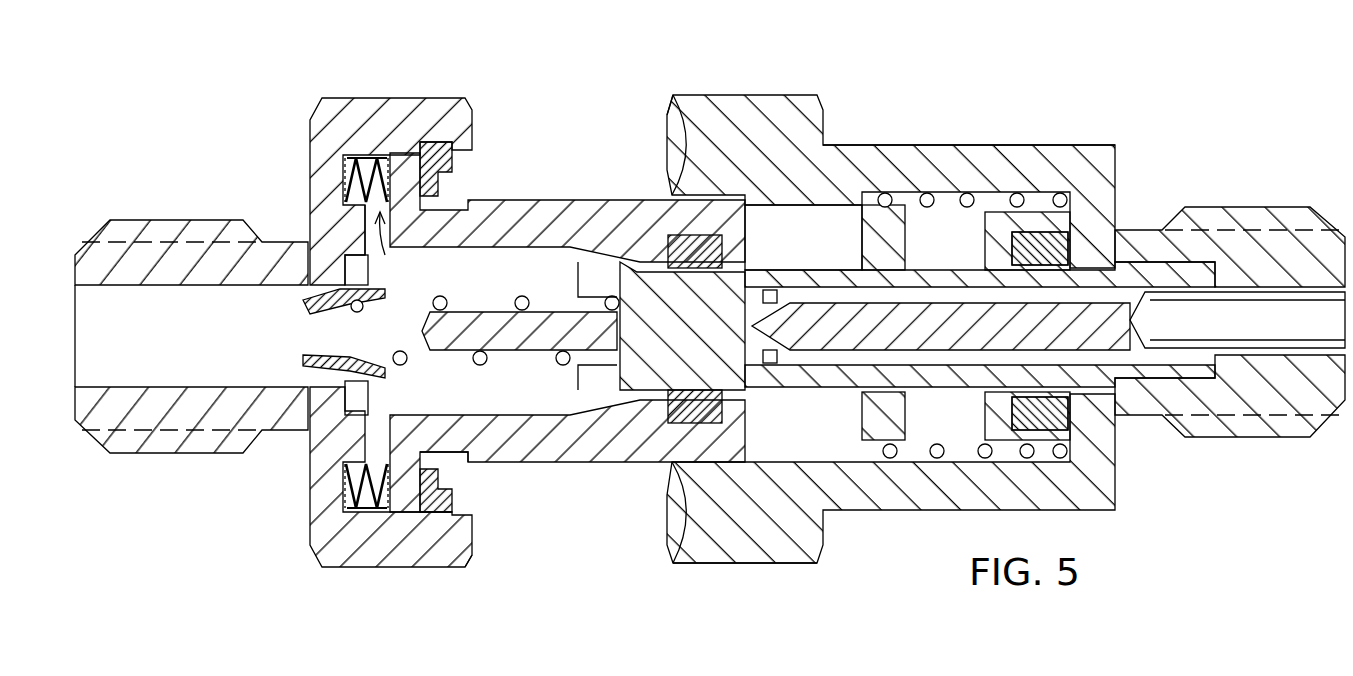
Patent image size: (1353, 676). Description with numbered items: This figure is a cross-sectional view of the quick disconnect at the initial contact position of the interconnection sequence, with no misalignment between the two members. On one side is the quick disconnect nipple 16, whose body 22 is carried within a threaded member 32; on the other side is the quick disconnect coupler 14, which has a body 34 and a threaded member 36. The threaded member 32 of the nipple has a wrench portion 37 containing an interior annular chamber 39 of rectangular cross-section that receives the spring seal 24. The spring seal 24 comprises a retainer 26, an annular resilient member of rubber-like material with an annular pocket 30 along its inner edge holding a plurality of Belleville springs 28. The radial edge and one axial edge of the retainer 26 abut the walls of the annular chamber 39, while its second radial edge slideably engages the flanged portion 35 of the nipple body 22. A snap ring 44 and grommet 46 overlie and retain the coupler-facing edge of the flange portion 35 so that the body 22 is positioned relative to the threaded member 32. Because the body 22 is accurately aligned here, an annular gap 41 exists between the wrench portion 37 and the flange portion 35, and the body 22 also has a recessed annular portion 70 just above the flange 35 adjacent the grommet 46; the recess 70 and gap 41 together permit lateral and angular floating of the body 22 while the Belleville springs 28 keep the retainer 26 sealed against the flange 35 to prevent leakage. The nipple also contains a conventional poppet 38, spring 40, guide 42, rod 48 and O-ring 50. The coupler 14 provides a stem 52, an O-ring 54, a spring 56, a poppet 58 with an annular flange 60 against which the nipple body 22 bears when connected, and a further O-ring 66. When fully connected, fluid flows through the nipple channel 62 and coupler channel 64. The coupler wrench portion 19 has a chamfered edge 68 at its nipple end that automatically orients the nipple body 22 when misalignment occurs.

The quick disconnect coupler 14 is at (742, 95).
The quick disconnect nipple 16 is at (478, 565).
The wrench portion 19 is at (732, 563).
The body 22 is at (549, 200).
The spring seal 24 is at (308, 180).
The retainer 26 is at (375, 470).
The Belleville springs 28 is at (372, 152).
The annular pocket 30 is at (345, 487).
The threaded member 32 is at (130, 220).
The body 34 is at (893, 145).
The flanged portion 35 is at (405, 520).
The threaded member 36 is at (1295, 208).
The wrench portion 37 is at (322, 120).
The poppet 38 is at (572, 398).
The annular chamber 39 is at (385, 220).
The spring 40 is at (455, 300).
The annular gap 41 is at (392, 205).
The guide 42 is at (322, 370).
The snap ring 44 is at (452, 168).
The grommet 46 is at (430, 530).
The rod 48 is at (507, 310).
The O-ring 50 is at (634, 458).
The stem 52 is at (793, 330).
The O-ring 54 is at (766, 272).
The spring 56 is at (937, 495).
The poppet 58 is at (940, 268).
The annular flange 60 is at (912, 440).
The nipple channel 62 is at (549, 290).
The coupler channel 64 is at (1075, 292).
The O-ring 66 is at (1030, 232).
The chamfered edge 68 is at (688, 110).
The recessed annular portion 70 is at (470, 462).